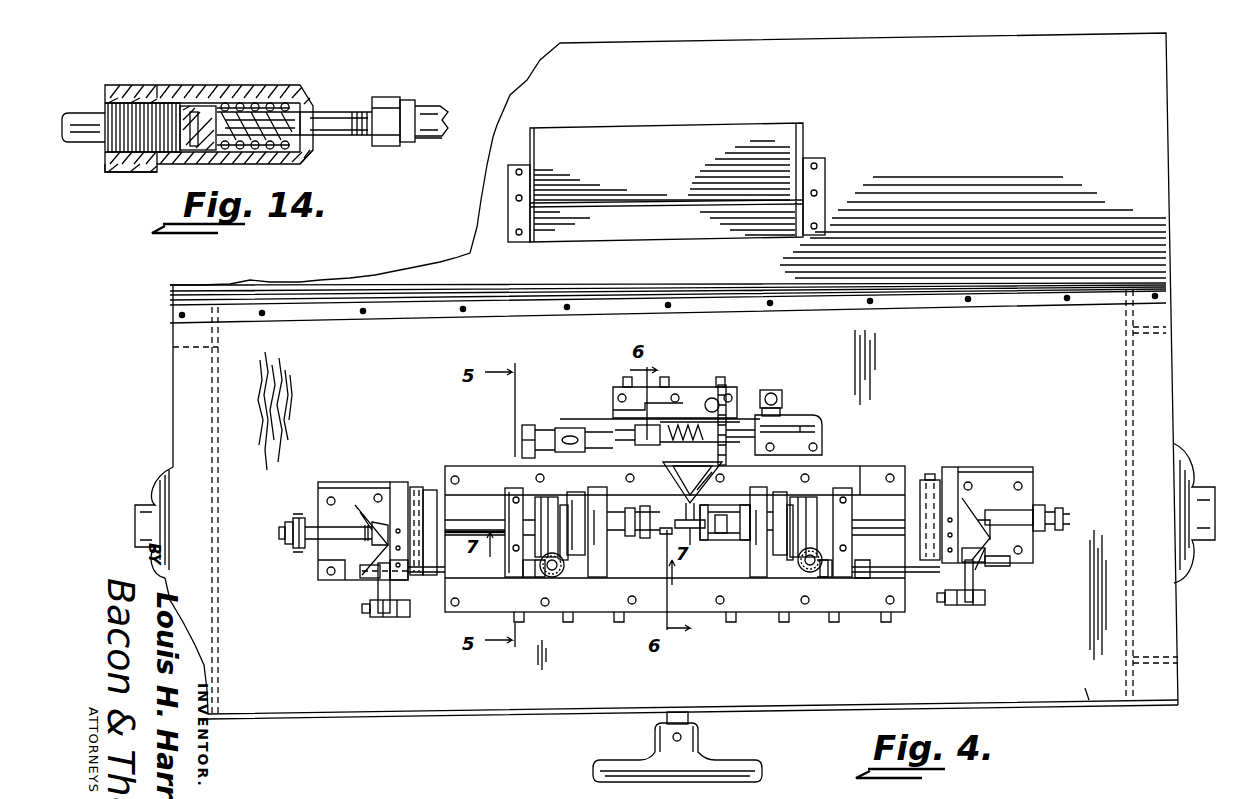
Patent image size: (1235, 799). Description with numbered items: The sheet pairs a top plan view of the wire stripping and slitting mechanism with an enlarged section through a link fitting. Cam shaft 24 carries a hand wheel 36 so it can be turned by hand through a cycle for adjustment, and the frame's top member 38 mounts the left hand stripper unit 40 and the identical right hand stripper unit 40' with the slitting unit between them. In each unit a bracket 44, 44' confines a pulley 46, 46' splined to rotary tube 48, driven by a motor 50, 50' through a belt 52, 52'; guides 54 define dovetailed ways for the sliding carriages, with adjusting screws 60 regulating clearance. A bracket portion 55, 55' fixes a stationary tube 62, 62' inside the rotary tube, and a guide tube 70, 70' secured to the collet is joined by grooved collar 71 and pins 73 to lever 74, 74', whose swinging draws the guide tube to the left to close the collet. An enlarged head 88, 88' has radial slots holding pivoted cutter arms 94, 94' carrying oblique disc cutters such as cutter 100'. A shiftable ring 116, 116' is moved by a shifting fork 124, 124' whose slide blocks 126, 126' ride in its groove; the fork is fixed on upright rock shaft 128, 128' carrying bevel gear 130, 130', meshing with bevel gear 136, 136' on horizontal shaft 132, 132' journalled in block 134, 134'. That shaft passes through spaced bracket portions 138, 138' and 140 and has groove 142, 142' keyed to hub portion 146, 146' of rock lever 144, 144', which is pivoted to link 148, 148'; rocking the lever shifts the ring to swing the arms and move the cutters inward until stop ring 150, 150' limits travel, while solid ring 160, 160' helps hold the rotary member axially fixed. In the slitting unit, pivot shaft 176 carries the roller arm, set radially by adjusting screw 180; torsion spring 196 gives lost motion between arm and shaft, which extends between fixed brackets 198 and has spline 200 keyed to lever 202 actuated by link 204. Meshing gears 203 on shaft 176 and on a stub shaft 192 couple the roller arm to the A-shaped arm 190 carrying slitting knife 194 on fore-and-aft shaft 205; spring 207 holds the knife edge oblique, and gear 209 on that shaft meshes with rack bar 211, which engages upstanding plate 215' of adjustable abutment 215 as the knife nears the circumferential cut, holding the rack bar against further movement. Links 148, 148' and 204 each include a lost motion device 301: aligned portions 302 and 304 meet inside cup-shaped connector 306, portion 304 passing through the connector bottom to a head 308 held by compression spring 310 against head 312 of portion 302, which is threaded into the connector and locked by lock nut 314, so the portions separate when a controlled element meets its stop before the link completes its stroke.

In FIG. 14, the lost motion device 301 is at (232, 82).
In FIG. 14, the link portion 302 is at (78, 116).
In FIG. 14, the link portion 304 is at (333, 110).
In FIG. 14, the cup-shaped connector 306 is at (305, 160).
In FIG. 14, the head 308 is at (212, 152).
In FIG. 14, the compression spring 310 is at (246, 94).
In FIG. 14, the head 312 is at (138, 90).
In FIG. 14, the lock nut 314 is at (112, 170).
In FIG. 4, the cam shaft 24 is at (689, 718).
In FIG. 4, the hand wheel 36 is at (735, 763).
In FIG. 4, the top member 38 is at (1087, 690).
In FIG. 4, the left hand stripper unit 40 is at (533, 443).
In FIG. 4, the right hand stripper unit 40' is at (875, 454).
In FIG. 4, the bracket 44 is at (363, 517).
In FIG. 4, the bracket 44' is at (987, 491).
In FIG. 4, the pulley 46 is at (429, 513).
In FIG. 4, the pulley 46' is at (921, 502).
In FIG. 4, the rotary hollow shaft or tube 48 is at (470, 522).
In FIG. 4, the motor 50 is at (152, 512).
In FIG. 4, the motor 50' is at (1194, 506).
In FIG. 4, the belt 52 is at (408, 513).
In FIG. 4, the belt 52' is at (930, 450).
In FIG. 4, the guides 54 is at (488, 465).
In FIG. 4, the bracket portion 55 is at (362, 534).
In FIG. 4, the bracket portion 55' is at (967, 502).
In FIG. 4, the adjusting screws 60 is at (626, 384).
In FIG. 4, the stationary tube 62 is at (315, 578).
In FIG. 4, the stationary tube 62' is at (990, 509).
In FIG. 4, the guide tube 70 is at (303, 518).
In FIG. 4, the guide tube 70' is at (1020, 510).
In FIG. 4, the grooved collar 71 is at (289, 522).
In FIG. 4, the pins 73 is at (286, 533).
In FIG. 4, the lever 74 is at (277, 540).
In FIG. 4, the lever 74' is at (1051, 499).
In FIG. 4, the enlarged head 88 is at (646, 553).
In FIG. 4, the enlarged head 88' is at (730, 543).
In FIG. 4, the cutter arms 94 is at (633, 514).
In FIG. 4, the cutter arms 94' is at (758, 495).
In FIG. 4, the disc cutter 100' is at (696, 553).
In FIG. 4, the ring 116 is at (518, 519).
In FIG. 4, the ring 116' is at (863, 532).
In FIG. 4, the shifting fork 124 is at (587, 553).
In FIG. 4, the shifting fork 124' is at (780, 553).
In FIG. 4, the slide blocks 126 is at (557, 511).
In FIG. 4, the slide blocks 126' is at (822, 508).
In FIG. 4, the upright rock shaft 128 is at (564, 577).
In FIG. 4, the upright rock shaft 128' is at (829, 594).
In FIG. 4, the bevel gear 130 is at (526, 583).
In FIG. 4, the bevel gear 130' is at (803, 602).
In FIG. 4, the horizontal shaft 132 is at (452, 586).
In FIG. 4, the horizontal shaft 132' is at (896, 580).
In FIG. 4, the block 134 is at (498, 526).
In FIG. 4, the block 134' is at (878, 534).
In FIG. 4, the bevel gear 136 is at (511, 582).
In FIG. 4, the bevel gear 136' is at (841, 579).
In FIG. 4, the bracket portion 138 is at (368, 585).
In FIG. 4, the bracket portion 138' is at (992, 543).
In FIG. 4, the bracket portion 140 is at (408, 578).
In FIG. 4, the longitudinal groove 142 is at (345, 543).
In FIG. 4, the longitudinal groove 142' is at (1028, 567).
In FIG. 4, the rock lever 144 is at (364, 602).
In FIG. 4, the rock lever 144' is at (996, 588).
In FIG. 4, the hub portion 146 is at (359, 527).
In FIG. 4, the hub portion 146' is at (1004, 572).
In FIG. 4, the link 148 is at (386, 624).
In FIG. 4, the link 148' is at (961, 613).
In FIG. 4, the stop ring 150 is at (585, 509).
In FIG. 4, the stop ring 150' is at (758, 546).
In FIG. 4, the solid ring 160 is at (609, 520).
In FIG. 4, the solid ring 160' is at (779, 518).
In FIG. 4, the pivot shaft 176 is at (745, 410).
In FIG. 4, the adjusting screw 180 is at (715, 385).
In FIG. 4, the lever 190 is at (668, 468).
In FIG. 4, the stub shafts 192 is at (775, 448).
In FIG. 4, the slitting knife 194 is at (690, 545).
In FIG. 4, the torsion spring 196 is at (700, 424).
In FIG. 4, the fixed brackets 198 is at (782, 413).
In FIG. 4, the longitudinal groove or spline 200 is at (822, 436).
In FIG. 4, the lever 202 is at (784, 398).
In FIG. 4, the gear 203 is at (722, 388).
In FIG. 4, the link 204 is at (775, 393).
In FIG. 4, the fore-and-aft shaft 205 is at (672, 530).
In FIG. 4, the spring 207 is at (699, 496).
In FIG. 4, the gear 209 is at (668, 427).
In FIG. 4, the rack bar 211 is at (615, 440).
In FIG. 4, the adjustable abutment 215 is at (548, 425).
In FIG. 4, the upstanding plate 215' is at (540, 427).